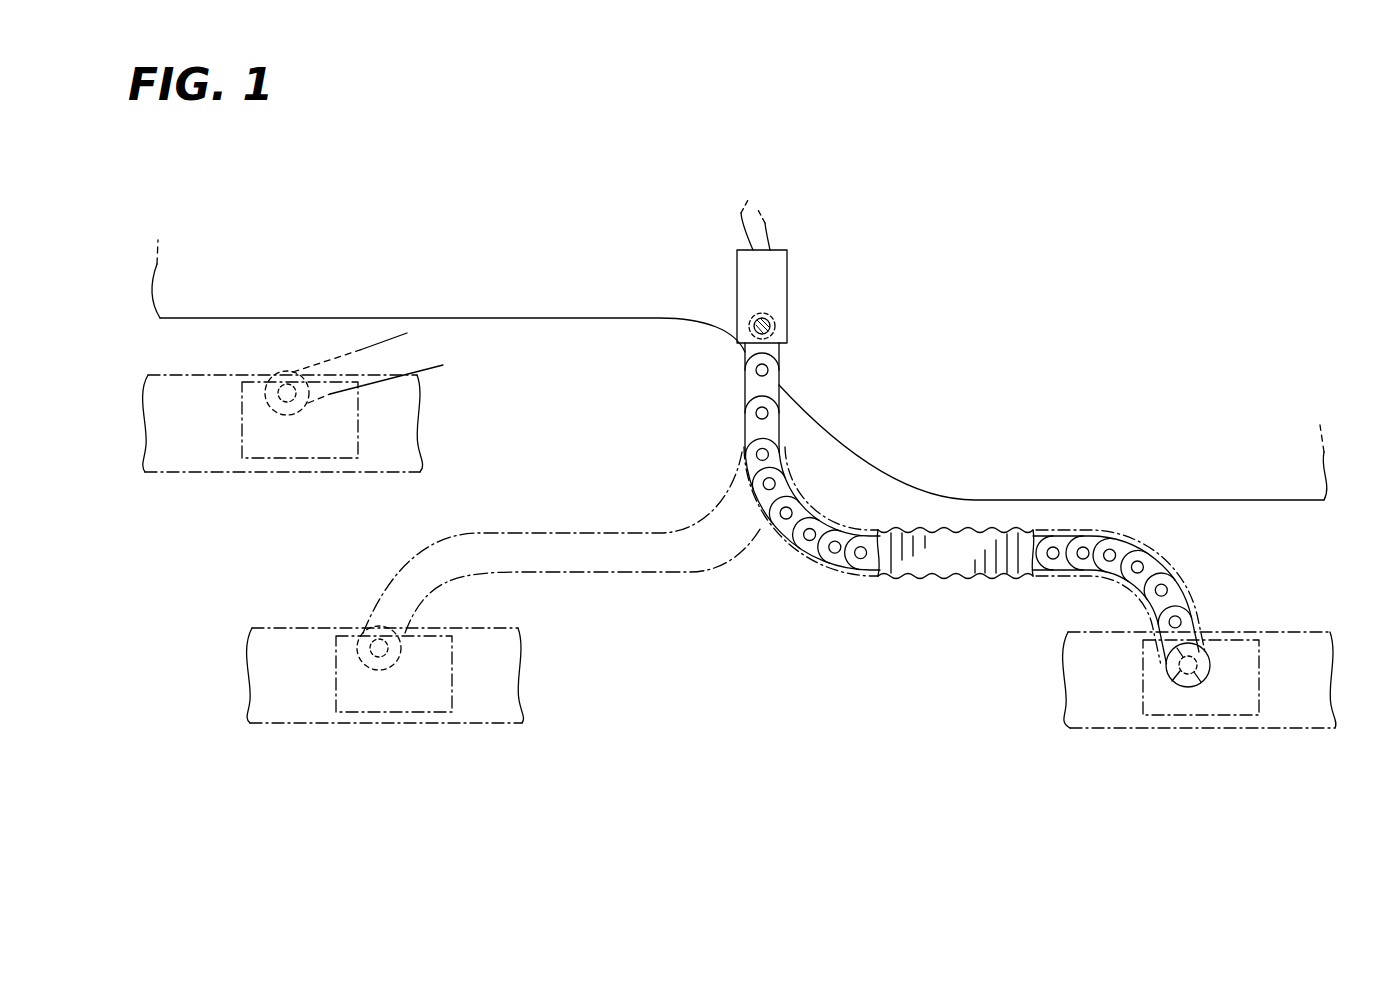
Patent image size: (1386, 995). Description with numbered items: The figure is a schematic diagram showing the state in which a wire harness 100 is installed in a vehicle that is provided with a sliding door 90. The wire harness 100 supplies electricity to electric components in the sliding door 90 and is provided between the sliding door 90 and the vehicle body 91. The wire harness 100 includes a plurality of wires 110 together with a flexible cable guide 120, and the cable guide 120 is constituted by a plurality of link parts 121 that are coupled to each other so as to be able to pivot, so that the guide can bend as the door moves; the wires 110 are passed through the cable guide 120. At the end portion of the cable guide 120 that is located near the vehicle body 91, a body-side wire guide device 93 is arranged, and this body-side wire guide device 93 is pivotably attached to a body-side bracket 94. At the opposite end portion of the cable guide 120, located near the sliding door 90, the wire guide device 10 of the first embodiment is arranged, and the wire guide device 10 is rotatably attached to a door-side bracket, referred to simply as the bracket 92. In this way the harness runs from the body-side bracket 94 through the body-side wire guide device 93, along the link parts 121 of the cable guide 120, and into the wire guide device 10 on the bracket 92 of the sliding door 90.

The wire guide device 10 is at (1205, 653).
The sliding door 90 is at (1093, 713).
The vehicle body 91 is at (632, 303).
The bracket 92 is at (1208, 705).
The body-side wire guide device 93 is at (773, 313).
The body-side bracket 94 is at (777, 262).
The wire harness 100 is at (911, 598).
The wires 110 is at (1180, 675).
The cable guide 120 is at (840, 560).
The link parts 121 is at (1188, 624).